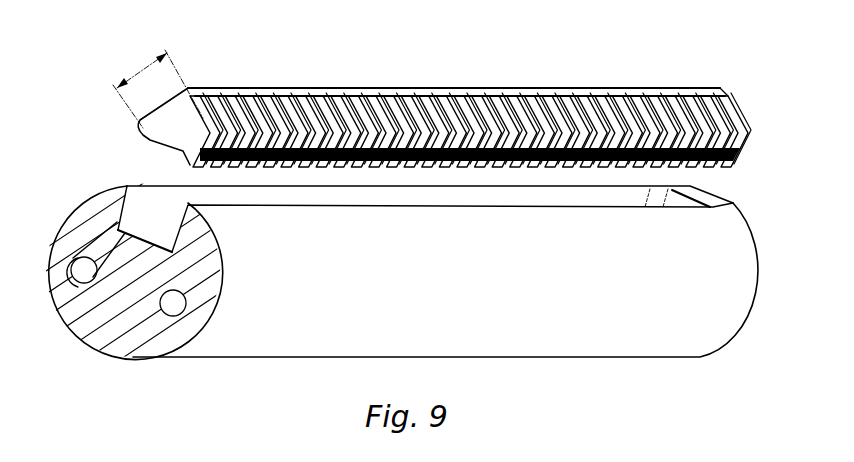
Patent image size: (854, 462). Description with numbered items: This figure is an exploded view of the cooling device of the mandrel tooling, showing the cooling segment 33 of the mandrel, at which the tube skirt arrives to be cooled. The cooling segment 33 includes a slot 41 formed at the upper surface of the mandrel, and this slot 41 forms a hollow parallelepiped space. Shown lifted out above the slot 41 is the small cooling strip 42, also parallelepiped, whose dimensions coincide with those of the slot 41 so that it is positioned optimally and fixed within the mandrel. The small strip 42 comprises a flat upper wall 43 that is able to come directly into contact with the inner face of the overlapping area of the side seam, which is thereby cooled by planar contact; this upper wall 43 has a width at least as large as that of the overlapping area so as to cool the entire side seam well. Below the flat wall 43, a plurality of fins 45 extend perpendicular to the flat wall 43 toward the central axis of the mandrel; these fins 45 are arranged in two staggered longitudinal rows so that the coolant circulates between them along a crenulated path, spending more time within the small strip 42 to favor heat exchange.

The cooling segment 33 is at (537, 320).
The slot 41 is at (141, 206).
The small cooling strip 42 is at (432, 92).
The flat upper wall 43 is at (493, 88).
The fins 45 is at (398, 88).